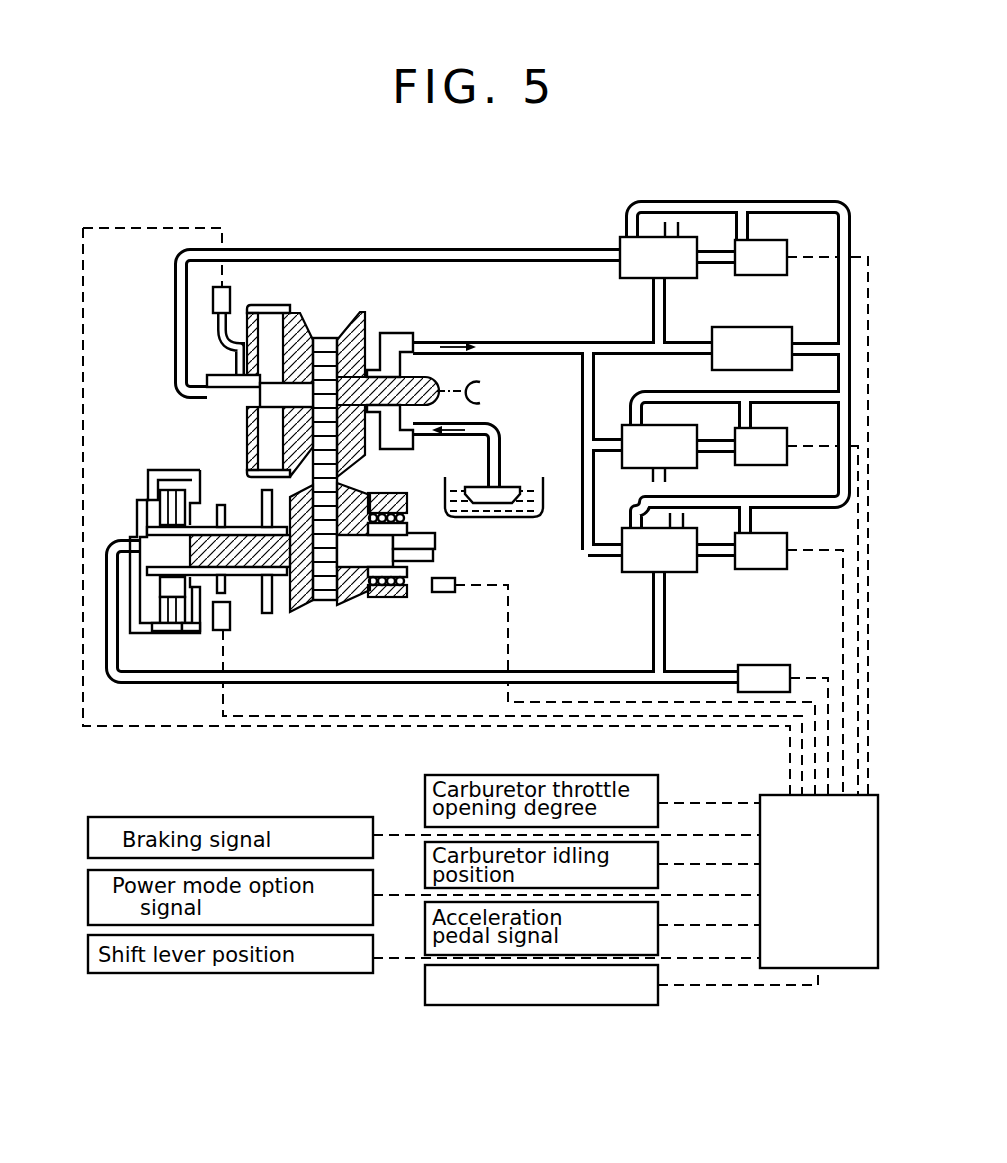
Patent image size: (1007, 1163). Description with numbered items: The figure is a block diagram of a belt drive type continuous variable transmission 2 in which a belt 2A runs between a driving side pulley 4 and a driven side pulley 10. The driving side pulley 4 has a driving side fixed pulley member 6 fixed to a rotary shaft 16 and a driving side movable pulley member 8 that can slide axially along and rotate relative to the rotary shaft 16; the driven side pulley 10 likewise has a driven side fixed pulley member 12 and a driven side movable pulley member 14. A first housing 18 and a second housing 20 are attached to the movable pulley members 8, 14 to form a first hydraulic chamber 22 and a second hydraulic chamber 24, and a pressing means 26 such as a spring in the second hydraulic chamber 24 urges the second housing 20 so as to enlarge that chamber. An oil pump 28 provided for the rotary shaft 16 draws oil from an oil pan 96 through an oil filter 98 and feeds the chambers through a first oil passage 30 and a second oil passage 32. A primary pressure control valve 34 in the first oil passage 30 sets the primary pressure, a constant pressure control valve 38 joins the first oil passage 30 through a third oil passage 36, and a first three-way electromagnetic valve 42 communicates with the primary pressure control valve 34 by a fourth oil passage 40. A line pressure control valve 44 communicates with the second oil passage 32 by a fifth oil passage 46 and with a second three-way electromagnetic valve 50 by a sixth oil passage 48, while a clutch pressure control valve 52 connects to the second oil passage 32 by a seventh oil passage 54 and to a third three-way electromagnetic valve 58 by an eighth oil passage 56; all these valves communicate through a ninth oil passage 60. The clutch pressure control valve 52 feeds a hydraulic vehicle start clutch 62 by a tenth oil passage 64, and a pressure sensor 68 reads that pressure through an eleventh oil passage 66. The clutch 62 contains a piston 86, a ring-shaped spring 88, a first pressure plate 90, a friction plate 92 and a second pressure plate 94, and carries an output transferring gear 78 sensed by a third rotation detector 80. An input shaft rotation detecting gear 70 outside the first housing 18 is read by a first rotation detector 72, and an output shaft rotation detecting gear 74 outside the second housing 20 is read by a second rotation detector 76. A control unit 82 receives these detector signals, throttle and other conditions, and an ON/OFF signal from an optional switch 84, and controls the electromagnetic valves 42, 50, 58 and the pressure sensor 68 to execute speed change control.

The belt drive type continuous variable transmission 2 is at (795, 180).
The belt 2A is at (331, 338).
The driving side pulley 4 is at (185, 411).
The driving side fixed pulley member 6 is at (366, 314).
The driving side movable pulley member 8 is at (312, 330).
The driven side pulley 10 is at (422, 602).
The driven side fixed pulley member 12 is at (312, 600).
The driven side movable pulley member 14 is at (360, 606).
The rotary shaft 16 is at (437, 400).
The first housing 18 is at (250, 308).
The second housing 20 is at (393, 507).
The first hydraulic chamber 22 is at (268, 433).
The second hydraulic chamber 24 is at (380, 592).
The pressing means 26 is at (413, 598).
The oil pump 28 is at (402, 332).
The first oil passage 30 is at (533, 250).
The second oil passage 32 is at (588, 341).
The primary pressure control valve 34 is at (658, 250).
The third oil passage 36 is at (670, 348).
The constant pressure control valve 38 is at (752, 348).
The fourth oil passage 40 is at (718, 262).
The first three-way electromagnetic valve 42 is at (761, 257).
The line pressure control valve 44 is at (659, 453).
The fifth oil passage 46 is at (588, 437).
The sixth oil passage 48 is at (712, 452).
The second three-way electromagnetic valve 50 is at (761, 446).
The clutch pressure control valve 52 is at (659, 542).
The seventh oil passage 54 is at (600, 557).
The eighth oil passage 56 is at (725, 555).
The third three-way electromagnetic valve 58 is at (761, 551).
The ninth oil passage 60 is at (850, 215).
The hydraulic vehicle start clutch 62 is at (148, 483).
The tenth oil passage 64 is at (428, 682).
The eleventh oil passage 66 is at (707, 670).
The pressure sensor 68 is at (763, 665).
The input shaft rotation detecting gear 70 is at (243, 345).
The first rotation detector 72 is at (228, 287).
The output shaft rotation detecting gear 74 is at (430, 513).
The second rotation detector 76 is at (455, 582).
The output transferring gear 78 is at (226, 503).
The third rotation detector 80 is at (222, 633).
The control unit 82 is at (857, 966).
The optional switch 84 is at (517, 1005).
The piston 86 is at (158, 577).
The ring-shaped spring 88 is at (167, 600).
The first pressure plate 90 is at (158, 633).
The friction plate 92 is at (180, 630).
The second pressure plate 94 is at (197, 630).
The oil pan 96 is at (507, 510).
The oil filter 98 is at (510, 487).